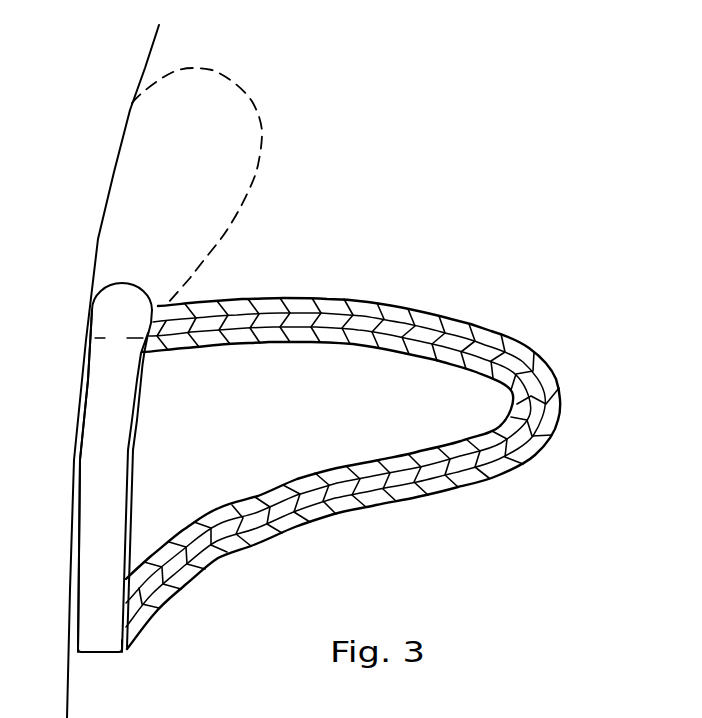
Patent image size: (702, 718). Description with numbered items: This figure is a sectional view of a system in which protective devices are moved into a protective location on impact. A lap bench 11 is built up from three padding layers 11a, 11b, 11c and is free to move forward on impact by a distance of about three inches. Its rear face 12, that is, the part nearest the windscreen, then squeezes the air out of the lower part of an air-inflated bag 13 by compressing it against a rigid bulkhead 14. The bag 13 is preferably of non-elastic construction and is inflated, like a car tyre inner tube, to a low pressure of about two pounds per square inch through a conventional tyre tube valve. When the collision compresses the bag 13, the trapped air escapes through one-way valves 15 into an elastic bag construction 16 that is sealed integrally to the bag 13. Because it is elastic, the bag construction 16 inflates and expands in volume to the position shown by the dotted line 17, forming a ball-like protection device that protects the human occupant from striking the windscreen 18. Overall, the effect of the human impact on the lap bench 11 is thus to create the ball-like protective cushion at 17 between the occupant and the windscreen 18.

The lap bench 11 is at (359, 460).
The padding layer 11a is at (456, 321).
The padding layer 11b is at (500, 336).
The padding layer 11c is at (553, 376).
The rear face 12 is at (133, 500).
The air-inflated bag 13 is at (106, 494).
The rigid bulkhead 14 is at (76, 501).
The one-way valves 15 is at (107, 328).
The elastic bag construction 16 is at (131, 316).
The expanded elastic bag 17 is at (256, 100).
The windscreen 18 is at (93, 196).